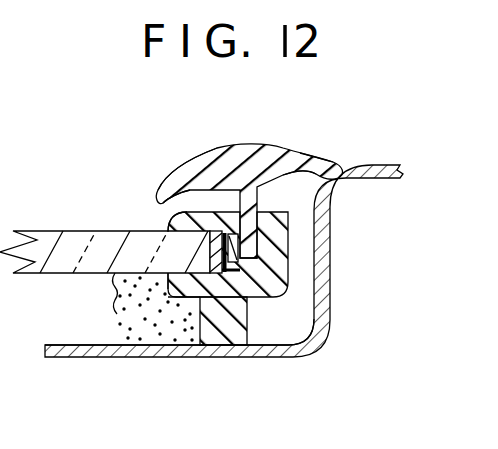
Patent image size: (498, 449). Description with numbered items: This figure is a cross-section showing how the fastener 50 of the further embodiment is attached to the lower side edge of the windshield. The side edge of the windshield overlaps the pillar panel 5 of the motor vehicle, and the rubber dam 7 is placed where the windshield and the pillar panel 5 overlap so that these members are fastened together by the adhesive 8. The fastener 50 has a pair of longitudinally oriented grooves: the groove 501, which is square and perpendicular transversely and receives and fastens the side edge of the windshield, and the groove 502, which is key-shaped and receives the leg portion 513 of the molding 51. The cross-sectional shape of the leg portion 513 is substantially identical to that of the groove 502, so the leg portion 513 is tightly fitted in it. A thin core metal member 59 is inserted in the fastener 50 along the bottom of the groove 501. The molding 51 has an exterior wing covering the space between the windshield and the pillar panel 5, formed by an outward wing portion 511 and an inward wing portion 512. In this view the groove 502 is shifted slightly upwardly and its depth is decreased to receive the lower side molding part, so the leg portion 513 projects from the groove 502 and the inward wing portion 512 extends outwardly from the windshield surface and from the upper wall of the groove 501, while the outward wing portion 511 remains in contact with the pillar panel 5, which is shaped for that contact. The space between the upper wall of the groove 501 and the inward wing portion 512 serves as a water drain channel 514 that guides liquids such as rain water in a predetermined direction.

The pillar panel 5 is at (389, 165).
The fastener 50 is at (266, 306).
The molding 51 is at (239, 142).
The outward wing portion 511 is at (335, 162).
The inward wing portion 512 is at (160, 190).
The leg portion 513 is at (262, 244).
The water drain channel 514 is at (165, 212).
The groove 502 is at (280, 248).
The groove 501 is at (200, 275).
The rubber dam 7 is at (234, 325).
The adhesive 8 is at (143, 313).
The core metal member 59 is at (172, 346).